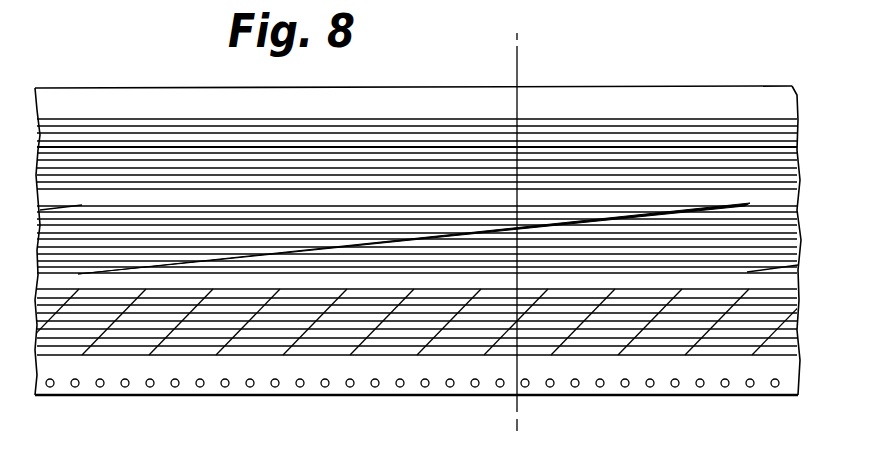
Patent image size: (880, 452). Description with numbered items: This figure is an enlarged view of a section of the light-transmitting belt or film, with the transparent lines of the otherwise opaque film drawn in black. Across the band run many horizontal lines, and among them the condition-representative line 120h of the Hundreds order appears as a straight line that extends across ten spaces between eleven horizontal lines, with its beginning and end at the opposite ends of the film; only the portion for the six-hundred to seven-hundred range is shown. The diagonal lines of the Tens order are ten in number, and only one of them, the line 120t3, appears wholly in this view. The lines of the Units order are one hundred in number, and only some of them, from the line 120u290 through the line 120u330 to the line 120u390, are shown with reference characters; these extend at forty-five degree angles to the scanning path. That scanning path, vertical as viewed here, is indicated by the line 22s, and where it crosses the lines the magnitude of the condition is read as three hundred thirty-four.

The condition-representative line in the Hundreds order 120h is at (72, 147).
The scanning path line 22s is at (516, 70).
The Tens order diagonal line 120t3 is at (648, 213).
The Units order line 120u390 is at (102, 340).
The Units order line 120u330 is at (500, 345).
The Units order line 120u290 is at (777, 333).